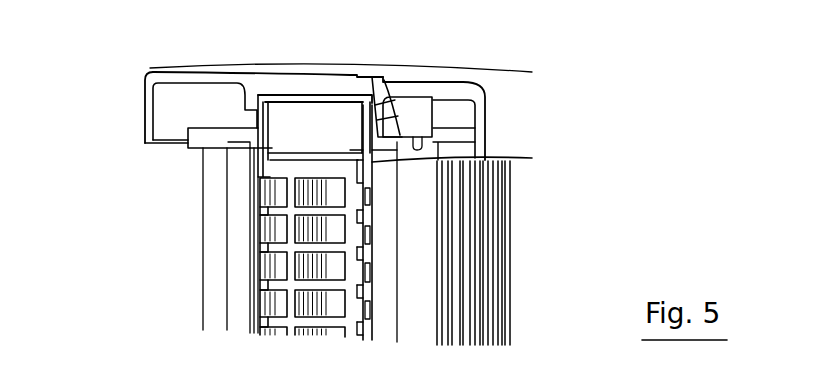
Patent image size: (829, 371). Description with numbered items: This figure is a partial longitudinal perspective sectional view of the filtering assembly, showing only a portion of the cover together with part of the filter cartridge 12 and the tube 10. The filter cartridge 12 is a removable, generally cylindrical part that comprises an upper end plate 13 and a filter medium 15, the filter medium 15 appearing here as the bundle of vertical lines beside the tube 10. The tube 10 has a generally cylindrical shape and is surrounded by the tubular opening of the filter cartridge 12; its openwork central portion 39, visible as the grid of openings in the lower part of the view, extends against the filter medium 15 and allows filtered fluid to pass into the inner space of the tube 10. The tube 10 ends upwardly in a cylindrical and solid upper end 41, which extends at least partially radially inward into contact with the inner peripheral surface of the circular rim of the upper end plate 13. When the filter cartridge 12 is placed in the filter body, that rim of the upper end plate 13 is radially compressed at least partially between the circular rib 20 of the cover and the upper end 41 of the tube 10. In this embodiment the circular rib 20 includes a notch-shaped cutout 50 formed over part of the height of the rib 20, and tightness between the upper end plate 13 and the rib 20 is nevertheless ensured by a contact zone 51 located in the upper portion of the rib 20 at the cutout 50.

The tube 10 is at (277, 212).
The filter cartridge 12 is at (478, 254).
The upper end plate 13 is at (203, 141).
The filter medium 15 is at (472, 290).
The circular rib 20 is at (440, 116).
The central portion 39 is at (288, 322).
The upper end 41 is at (290, 122).
The cutout 50 is at (418, 117).
The contact zone 51 is at (398, 118).